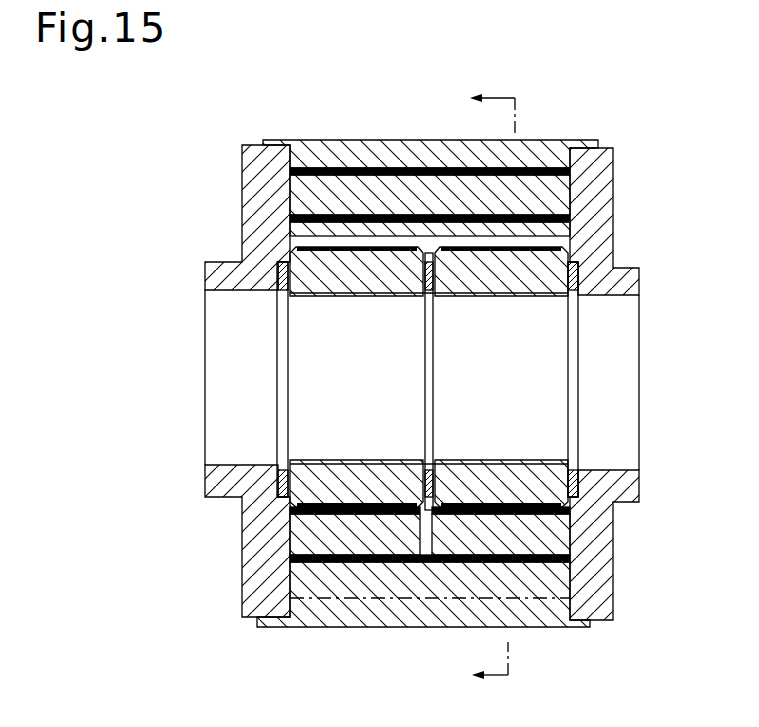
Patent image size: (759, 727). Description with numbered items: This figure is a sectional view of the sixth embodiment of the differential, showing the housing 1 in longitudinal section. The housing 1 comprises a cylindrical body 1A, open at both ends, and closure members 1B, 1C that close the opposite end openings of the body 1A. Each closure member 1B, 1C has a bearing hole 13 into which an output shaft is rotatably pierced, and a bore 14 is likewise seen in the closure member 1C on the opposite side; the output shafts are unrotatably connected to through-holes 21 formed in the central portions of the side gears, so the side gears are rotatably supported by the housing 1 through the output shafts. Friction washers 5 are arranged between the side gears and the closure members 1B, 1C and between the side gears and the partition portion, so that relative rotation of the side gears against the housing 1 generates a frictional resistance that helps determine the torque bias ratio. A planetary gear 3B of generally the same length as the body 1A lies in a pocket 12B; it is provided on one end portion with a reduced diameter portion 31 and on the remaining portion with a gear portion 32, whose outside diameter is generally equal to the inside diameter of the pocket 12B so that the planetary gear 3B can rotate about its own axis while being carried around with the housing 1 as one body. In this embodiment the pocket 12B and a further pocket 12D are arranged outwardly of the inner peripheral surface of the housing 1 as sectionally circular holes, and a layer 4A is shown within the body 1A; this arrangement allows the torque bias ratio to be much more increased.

The housing 1 is at (333, 139).
The cylindrical body 1A is at (378, 140).
The closure member 1B is at (616, 178).
The closure member 1C is at (252, 168).
The planetary gear 3B is at (361, 570).
The intermediate layer 4A is at (535, 190).
The friction washer 5 is at (273, 266).
The pocket 12B is at (331, 167).
The thin plate 12D is at (450, 561).
The bearing hole 13 is at (633, 296).
The bore of left flange 14 is at (246, 294).
The through-hole 21 is at (336, 297).
The reduced diameter portion 31 is at (510, 538).
The gear portion 32 is at (311, 549).